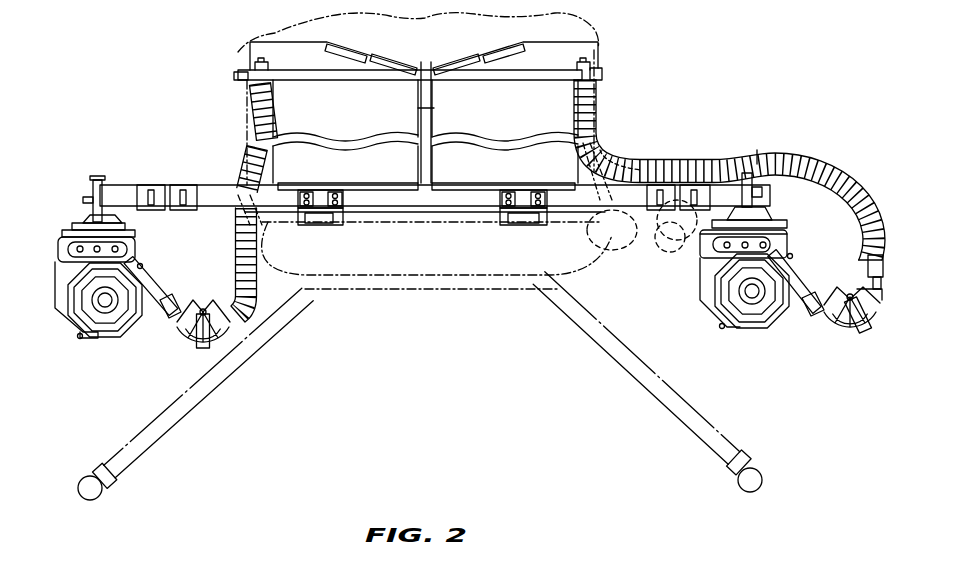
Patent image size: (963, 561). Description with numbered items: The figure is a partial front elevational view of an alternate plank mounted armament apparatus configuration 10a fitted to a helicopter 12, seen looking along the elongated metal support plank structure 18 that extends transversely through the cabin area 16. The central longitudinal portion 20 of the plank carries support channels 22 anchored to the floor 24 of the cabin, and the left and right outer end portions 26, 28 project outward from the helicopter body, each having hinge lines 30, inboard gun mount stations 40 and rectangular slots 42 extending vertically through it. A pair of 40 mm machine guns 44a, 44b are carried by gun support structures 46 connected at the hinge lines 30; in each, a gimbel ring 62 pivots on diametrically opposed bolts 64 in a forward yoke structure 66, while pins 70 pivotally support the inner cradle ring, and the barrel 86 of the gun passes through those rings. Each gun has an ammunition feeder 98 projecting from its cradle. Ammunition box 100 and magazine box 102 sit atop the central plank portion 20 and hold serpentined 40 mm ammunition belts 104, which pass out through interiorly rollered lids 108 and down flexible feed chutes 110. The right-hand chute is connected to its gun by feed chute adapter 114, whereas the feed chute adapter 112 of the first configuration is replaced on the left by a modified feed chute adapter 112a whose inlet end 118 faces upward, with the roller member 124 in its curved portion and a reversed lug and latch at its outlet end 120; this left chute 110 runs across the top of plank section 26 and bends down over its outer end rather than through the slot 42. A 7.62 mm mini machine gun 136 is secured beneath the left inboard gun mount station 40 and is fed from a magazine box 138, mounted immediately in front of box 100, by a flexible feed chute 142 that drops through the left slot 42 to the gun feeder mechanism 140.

The alternate plank mounted armament apparatus configuration 10a is at (663, 114).
The helicopter 12 is at (462, 288).
The cabin area 16 is at (590, 112).
The support plank structure 18 is at (385, 212).
The central longitudinal portion 20 is at (450, 207).
The support channels 22 is at (300, 216).
The floor 24 is at (400, 215).
The left outer end portion 26 is at (645, 152).
The right outer end portion 28 is at (232, 190).
The hinge lines 30 is at (108, 180).
The inboard gun mount stations 40 is at (172, 185).
The rectangular slots 42 is at (258, 175).
The 40 mm machine gun 44a is at (756, 316).
The 40 mm machine gun 44b is at (112, 326).
The gun support structures 46 is at (146, 236).
The gimbel ring 62 is at (116, 334).
The bolts 64 is at (148, 268).
The forward yoke structure 66 is at (702, 318).
The pins 70 is at (66, 238).
The barrel 86 is at (106, 316).
The ammunition feeder 98 is at (166, 292).
The ammunition box 100 is at (517, 119).
The magazine box 102 is at (364, 119).
The ammunition belts 104 is at (233, 344).
The rollered lids 108 is at (240, 50).
The flexible feed chutes 110 is at (247, 108).
The feed chute adapter 112 is at (274, 94).
The modified feed chute adapter 112a is at (839, 342).
The feed chute adapter 114 is at (194, 356).
The inlet end 118 is at (868, 266).
The outlet end 120 is at (810, 322).
The roller member 124 is at (204, 306).
The mini machine gun 136 is at (672, 252).
The magazine box 138 is at (419, 106).
The gun feeder mechanism 140 is at (662, 242).
The flexible feed chute 142 is at (620, 242).